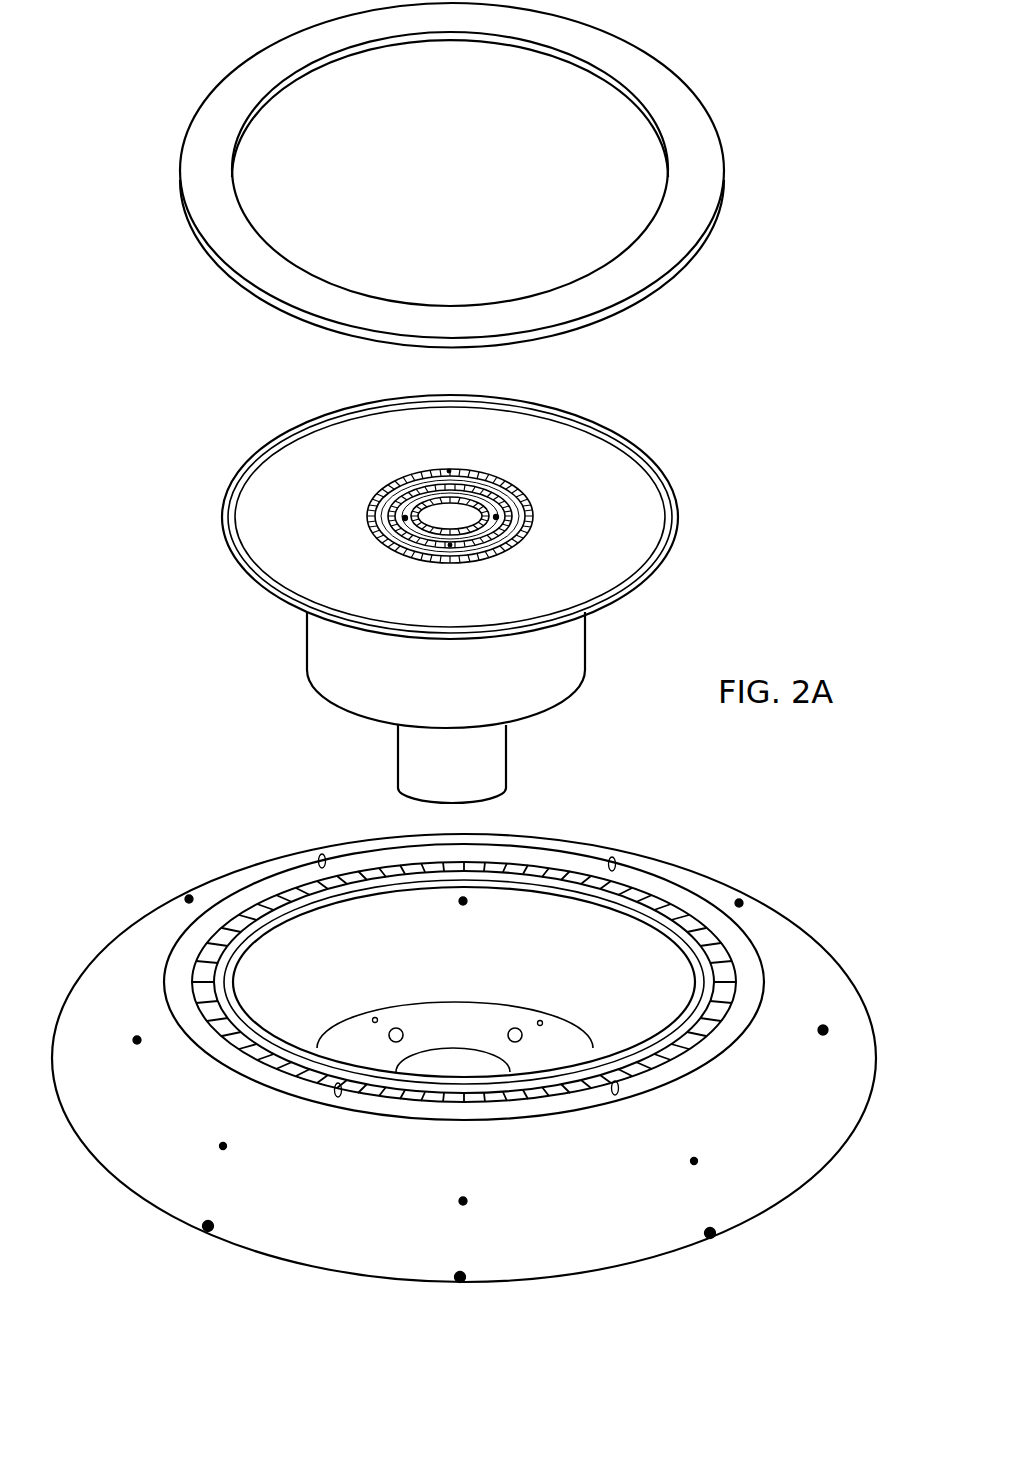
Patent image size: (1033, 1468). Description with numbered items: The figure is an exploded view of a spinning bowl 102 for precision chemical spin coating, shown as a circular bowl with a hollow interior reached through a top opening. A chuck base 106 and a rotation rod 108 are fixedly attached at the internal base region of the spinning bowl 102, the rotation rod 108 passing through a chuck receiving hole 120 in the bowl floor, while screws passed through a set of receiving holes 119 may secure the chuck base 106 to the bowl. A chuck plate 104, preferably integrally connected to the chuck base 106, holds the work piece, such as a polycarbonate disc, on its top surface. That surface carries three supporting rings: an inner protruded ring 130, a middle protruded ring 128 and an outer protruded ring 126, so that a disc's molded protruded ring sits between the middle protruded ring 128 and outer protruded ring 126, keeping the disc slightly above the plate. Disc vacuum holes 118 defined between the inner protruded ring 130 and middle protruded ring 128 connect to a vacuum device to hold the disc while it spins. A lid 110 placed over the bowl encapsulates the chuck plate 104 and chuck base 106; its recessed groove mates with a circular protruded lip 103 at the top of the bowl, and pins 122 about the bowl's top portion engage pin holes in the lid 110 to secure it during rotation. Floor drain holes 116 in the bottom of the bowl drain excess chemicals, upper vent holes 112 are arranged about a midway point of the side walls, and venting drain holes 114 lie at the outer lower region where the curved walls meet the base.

The spinning bowl 102 is at (843, 1008).
The circular protruded lip 103 is at (192, 975).
The chuck plate 104 is at (675, 548).
The chuck base 106 is at (586, 645).
The rotation rod 108 is at (507, 752).
The lid 110 is at (726, 182).
The upper vent holes 112 is at (188, 897).
The venting drain holes 114 is at (204, 1230).
The floor drain holes 116 is at (374, 1017).
The disc vacuum holes 118 is at (449, 470).
The receiving holes 119 is at (397, 1027).
The chuck receiving hole 120 is at (455, 1055).
The pins 122 is at (320, 854).
The outer protruded ring 126 is at (534, 524).
The middle protruded ring 128 is at (529, 506).
The inner protruded ring 130 is at (506, 503).